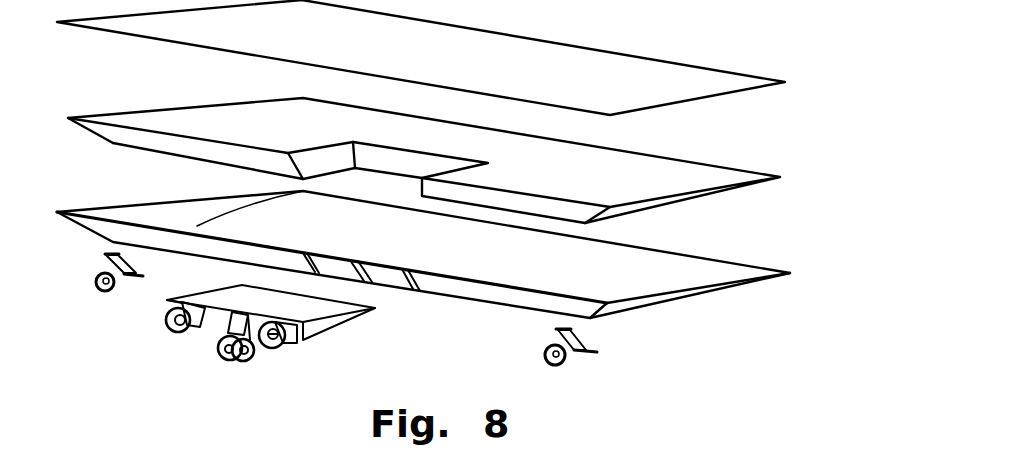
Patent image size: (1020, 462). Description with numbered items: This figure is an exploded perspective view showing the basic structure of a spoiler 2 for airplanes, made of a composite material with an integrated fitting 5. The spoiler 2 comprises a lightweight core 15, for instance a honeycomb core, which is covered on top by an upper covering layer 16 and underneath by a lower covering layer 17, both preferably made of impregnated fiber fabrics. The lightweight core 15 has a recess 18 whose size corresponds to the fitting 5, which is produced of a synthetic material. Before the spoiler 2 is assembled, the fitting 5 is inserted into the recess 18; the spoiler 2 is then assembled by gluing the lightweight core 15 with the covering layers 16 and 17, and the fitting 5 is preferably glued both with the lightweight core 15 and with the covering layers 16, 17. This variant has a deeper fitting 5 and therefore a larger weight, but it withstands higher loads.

The spoiler 2 is at (800, 175).
The fitting 5 is at (102, 263).
The lightweight core 15 is at (418, 147).
The upper covering layer 16 is at (582, 68).
The lower covering layer 17 is at (655, 268).
The recess 18 is at (325, 161).